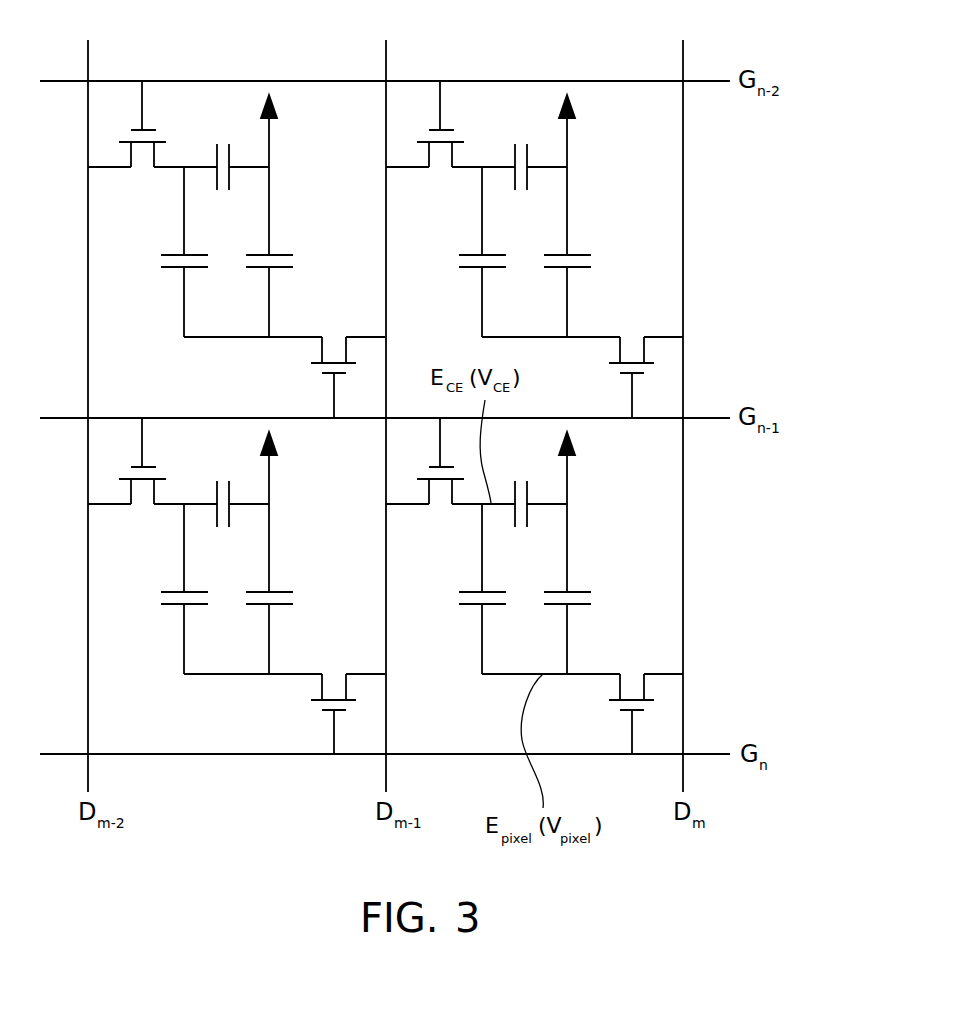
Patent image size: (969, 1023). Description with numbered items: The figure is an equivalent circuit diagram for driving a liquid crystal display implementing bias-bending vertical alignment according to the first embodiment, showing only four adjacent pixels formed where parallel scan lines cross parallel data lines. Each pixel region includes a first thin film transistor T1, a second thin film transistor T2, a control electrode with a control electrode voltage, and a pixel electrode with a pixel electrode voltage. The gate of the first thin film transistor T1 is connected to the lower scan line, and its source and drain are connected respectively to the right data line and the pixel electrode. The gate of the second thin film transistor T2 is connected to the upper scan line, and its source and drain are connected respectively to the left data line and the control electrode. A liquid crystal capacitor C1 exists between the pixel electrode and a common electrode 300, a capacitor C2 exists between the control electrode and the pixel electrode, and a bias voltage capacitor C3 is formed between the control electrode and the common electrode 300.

The common electrode 300 is at (570, 482).
The first thin film transistor T1 is at (466, 546).
The second thin film transistor T2 is at (291, 310).
The liquid crystal capacitor C1 is at (432, 436).
The capacitor C2 is at (319, 434).
The bias voltage capacitor C3 is at (372, 318).